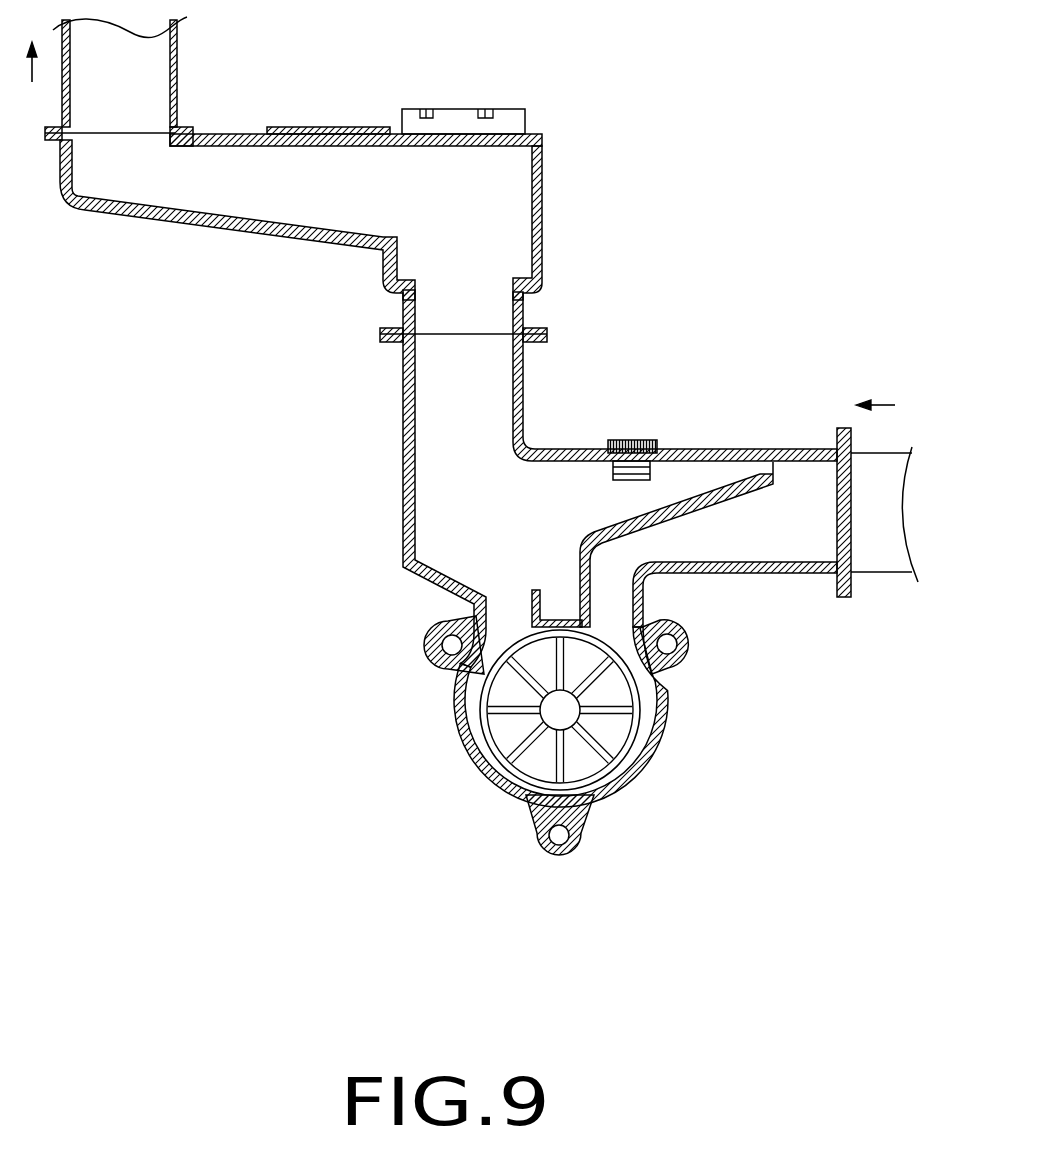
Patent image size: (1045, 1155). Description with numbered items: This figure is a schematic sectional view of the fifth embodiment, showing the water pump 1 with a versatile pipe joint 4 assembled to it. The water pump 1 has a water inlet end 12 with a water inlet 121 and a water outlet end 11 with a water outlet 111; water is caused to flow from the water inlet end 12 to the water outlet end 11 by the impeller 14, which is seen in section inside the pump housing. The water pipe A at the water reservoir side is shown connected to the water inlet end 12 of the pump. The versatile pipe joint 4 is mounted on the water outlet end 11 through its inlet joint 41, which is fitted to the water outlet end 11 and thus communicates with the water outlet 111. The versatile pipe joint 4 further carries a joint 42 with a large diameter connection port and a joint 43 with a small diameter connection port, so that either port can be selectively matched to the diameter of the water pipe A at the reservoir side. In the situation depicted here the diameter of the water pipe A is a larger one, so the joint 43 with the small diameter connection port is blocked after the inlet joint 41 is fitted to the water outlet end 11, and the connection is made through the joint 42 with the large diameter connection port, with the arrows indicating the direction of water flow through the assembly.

The water pump 1 is at (447, 738).
The water outlet end 11 is at (410, 358).
The water outlet 111 is at (468, 342).
The water inlet end 12 is at (810, 453).
The water inlet 121 is at (827, 510).
The impeller 14 is at (612, 754).
The versatile pipe joint 4 is at (545, 156).
The inlet joint 41 is at (467, 313).
The joint with large diameter connection port 42 is at (120, 142).
The joint with small diameter connection port 43 is at (332, 147).
The water pipe A is at (883, 563).